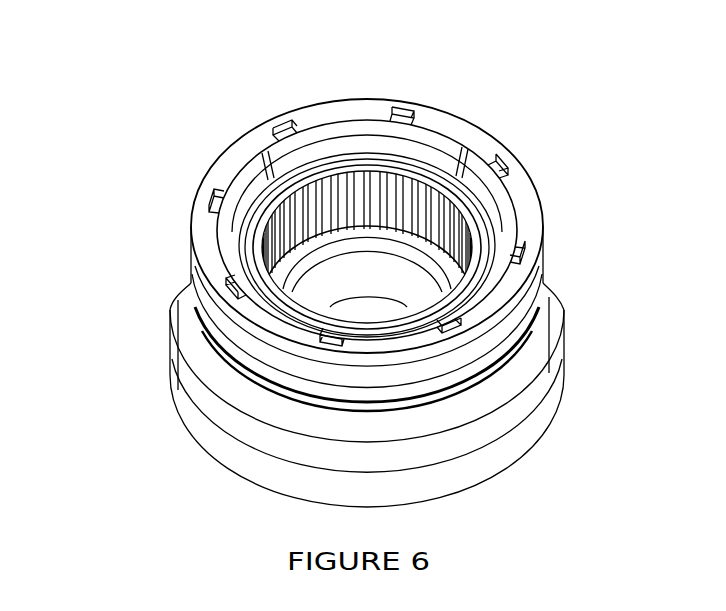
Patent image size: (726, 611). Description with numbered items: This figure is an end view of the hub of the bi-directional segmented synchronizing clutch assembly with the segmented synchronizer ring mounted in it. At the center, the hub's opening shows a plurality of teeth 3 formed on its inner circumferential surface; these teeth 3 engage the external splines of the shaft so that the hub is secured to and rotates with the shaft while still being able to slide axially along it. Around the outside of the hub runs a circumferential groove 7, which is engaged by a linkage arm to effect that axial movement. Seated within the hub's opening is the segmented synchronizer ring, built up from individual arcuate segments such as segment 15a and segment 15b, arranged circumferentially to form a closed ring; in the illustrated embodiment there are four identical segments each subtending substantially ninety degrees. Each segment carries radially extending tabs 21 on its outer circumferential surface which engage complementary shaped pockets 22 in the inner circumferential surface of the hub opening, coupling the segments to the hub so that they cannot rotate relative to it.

The teeth 3 is at (393, 187).
The circumferential groove 7 is at (242, 358).
The arcuate segment 15a is at (360, 132).
The arcuate segment 15b is at (510, 222).
The radially extending tabs 21 is at (307, 128).
The pockets 22 is at (212, 183).